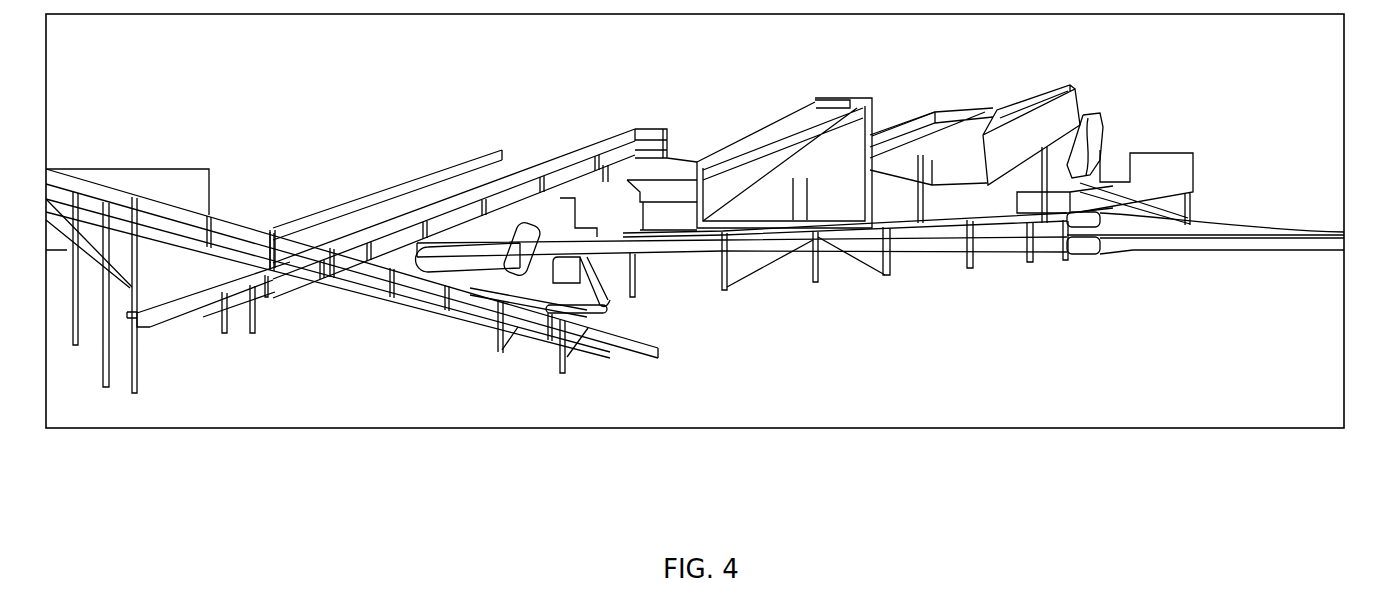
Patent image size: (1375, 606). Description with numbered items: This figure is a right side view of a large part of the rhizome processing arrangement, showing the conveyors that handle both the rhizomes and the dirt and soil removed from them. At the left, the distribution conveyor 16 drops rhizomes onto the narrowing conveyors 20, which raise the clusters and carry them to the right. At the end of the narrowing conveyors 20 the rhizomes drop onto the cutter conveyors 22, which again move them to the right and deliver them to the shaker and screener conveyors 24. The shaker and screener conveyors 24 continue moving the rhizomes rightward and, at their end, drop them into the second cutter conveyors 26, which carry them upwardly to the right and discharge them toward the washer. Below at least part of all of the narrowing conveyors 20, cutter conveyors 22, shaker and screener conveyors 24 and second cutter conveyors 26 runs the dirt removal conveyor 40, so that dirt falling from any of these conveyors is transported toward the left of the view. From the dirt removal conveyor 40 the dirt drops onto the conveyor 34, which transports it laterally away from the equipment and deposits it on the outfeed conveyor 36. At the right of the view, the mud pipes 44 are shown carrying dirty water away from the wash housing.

The distribution conveyor 16 is at (163, 178).
The narrowing conveyors 20 is at (510, 187).
The cutter conveyors 22 is at (822, 135).
The shaker and screener conveyors 24 is at (905, 148).
The second cutter conveyors 26 is at (1037, 127).
The conveyor 34 is at (580, 302).
The outfeed conveyor 36 is at (423, 302).
The dirt removal conveyor 40 is at (902, 237).
The mud pipes 44 is at (1170, 226).